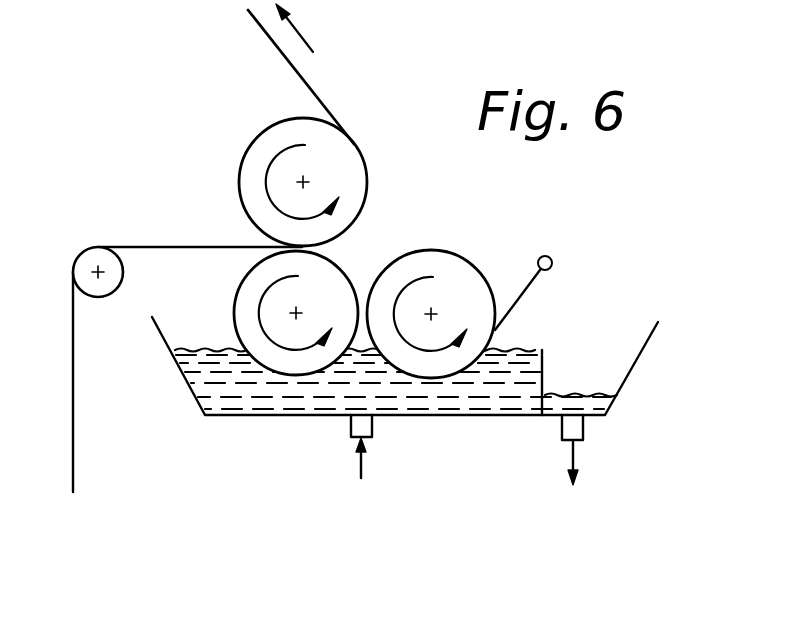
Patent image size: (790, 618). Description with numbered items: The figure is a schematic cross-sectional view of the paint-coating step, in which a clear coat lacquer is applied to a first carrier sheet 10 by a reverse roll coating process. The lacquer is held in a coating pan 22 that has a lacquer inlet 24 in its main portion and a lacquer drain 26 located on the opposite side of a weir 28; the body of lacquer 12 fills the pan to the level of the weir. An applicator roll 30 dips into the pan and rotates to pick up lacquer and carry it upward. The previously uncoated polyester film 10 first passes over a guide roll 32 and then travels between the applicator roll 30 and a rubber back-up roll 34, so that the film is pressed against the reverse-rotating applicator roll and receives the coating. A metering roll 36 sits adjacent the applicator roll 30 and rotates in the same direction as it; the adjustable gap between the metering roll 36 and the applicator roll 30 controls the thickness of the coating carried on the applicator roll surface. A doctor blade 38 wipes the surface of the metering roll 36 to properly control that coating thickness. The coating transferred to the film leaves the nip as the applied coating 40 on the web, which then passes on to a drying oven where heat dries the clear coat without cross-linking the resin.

The first carrier sheet 10 is at (74, 432).
The coating liquid 12 is at (468, 412).
The coating pan 22 is at (647, 346).
The lacquer inlet 24 is at (352, 426).
The lacquer drain 26 is at (583, 431).
The weir 28 is at (543, 374).
The applicator roll 30 is at (245, 280).
The guide roll 32 is at (100, 249).
The rubber back-up roll 34 is at (265, 136).
The metering roll 36 is at (460, 273).
The doctor blade 38 is at (498, 330).
The applied coating 40 is at (304, 78).